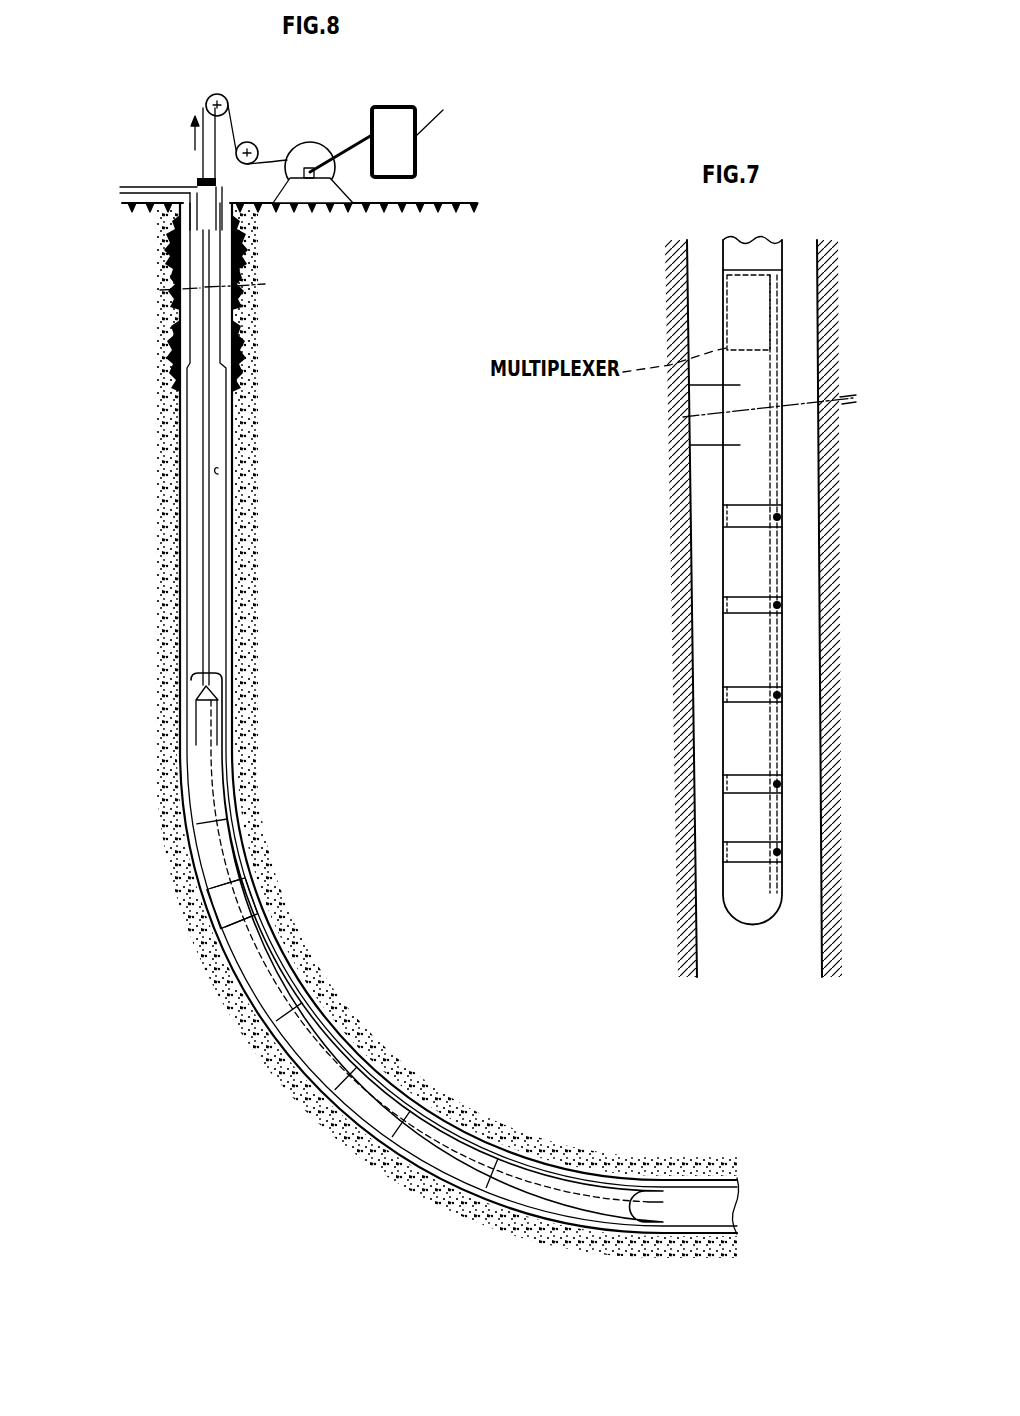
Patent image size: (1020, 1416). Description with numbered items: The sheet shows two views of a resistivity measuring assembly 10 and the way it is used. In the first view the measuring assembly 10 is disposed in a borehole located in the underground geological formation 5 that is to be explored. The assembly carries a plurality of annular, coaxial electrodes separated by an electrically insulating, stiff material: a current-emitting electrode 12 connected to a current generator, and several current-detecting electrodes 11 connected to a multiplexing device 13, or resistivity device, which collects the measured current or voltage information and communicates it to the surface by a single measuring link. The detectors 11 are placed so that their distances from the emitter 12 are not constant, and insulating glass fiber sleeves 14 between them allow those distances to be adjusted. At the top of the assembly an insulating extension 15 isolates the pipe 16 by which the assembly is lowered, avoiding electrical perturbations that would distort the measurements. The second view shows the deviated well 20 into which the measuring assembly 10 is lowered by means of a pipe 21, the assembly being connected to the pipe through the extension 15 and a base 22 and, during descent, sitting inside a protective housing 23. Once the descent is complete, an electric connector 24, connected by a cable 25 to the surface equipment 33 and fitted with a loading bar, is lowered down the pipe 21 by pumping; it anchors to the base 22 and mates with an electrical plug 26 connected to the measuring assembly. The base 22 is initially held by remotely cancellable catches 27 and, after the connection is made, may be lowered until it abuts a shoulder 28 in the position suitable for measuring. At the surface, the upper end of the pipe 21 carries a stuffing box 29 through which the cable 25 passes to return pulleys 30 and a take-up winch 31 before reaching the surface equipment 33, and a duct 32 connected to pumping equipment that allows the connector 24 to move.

In FIG. 7, the underground geological formation 5 is at (828, 490).
In FIG. 8, the measuring assembly 10 is at (528, 1187).
In FIG. 7, the measuring assembly 10 is at (745, 933).
In FIG. 7, the current-detecting electrodes 11 is at (785, 783).
In FIG. 7, the current-emitting electrode 12 is at (785, 851).
In FIG. 7, the multiplexing device 13 is at (735, 322).
In FIG. 7, the glass fiber sleeves 14 is at (742, 818).
In FIG. 8, the insulating extension 15 is at (410, 1110).
In FIG. 7, the insulating extension 15 is at (740, 445).
In FIG. 7, the pipe 16 is at (733, 258).
In FIG. 8, the well 20 is at (367, 1052).
In FIG. 8, the pipe 21 is at (232, 422).
In FIG. 8, the base 22 is at (235, 888).
In FIG. 8, the protective housing 23 is at (303, 1000).
In FIG. 8, the electric connector 24 is at (214, 778).
In FIG. 8, the cable 25 is at (207, 337).
In FIG. 8, the electrical plug 26 is at (242, 840).
In FIG. 8, the catches 27 is at (218, 468).
In FIG. 8, the shoulder 28 is at (250, 906).
In FIG. 8, the stuffing box 29 is at (200, 182).
In FIG. 8, the return pulleys 30 is at (228, 104).
In FIG. 8, the take-up winch 31 is at (309, 142).
In FIG. 8, the duct 32 is at (140, 187).
In FIG. 8, the surface equipment 33 is at (415, 165).